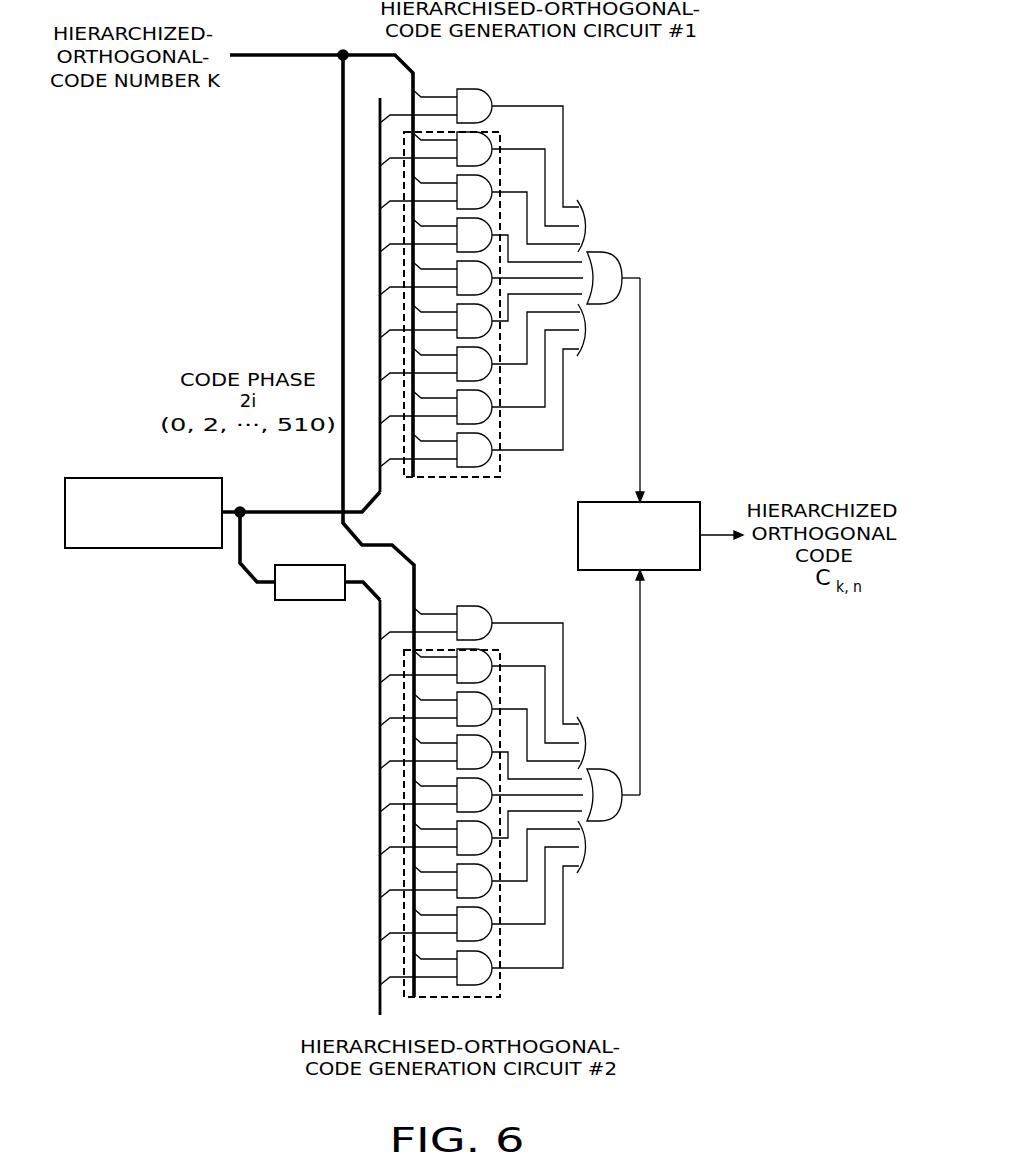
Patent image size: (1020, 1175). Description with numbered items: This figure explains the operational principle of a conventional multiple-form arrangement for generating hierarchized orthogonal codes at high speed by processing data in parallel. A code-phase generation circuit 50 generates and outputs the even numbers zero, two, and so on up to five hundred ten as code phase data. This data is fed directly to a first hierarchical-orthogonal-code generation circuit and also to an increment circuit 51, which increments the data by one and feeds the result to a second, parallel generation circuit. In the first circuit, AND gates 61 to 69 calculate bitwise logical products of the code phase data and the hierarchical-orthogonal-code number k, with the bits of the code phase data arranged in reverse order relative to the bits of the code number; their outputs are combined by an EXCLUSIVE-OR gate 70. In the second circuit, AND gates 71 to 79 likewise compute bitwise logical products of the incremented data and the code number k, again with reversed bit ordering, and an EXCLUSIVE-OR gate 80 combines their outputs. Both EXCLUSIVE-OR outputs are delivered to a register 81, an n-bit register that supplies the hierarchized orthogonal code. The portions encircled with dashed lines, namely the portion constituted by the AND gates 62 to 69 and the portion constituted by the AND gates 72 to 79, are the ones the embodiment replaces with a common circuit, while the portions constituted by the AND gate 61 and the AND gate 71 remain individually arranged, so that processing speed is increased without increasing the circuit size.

The code-phase generation circuit 50 is at (118, 478).
The increment circuit 51 is at (283, 565).
The AND gate 61 is at (480, 91).
The AND gate 62 is at (500, 132).
The AND gate 69 is at (482, 468).
The EXCLUSIVE-OR gate 70 is at (600, 252).
The AND gate 71 is at (480, 608).
The AND gate 72 is at (492, 658).
The AND gate 79 is at (482, 987).
The EXCLUSIVE-OR gate 80 is at (605, 821).
The register 81 is at (657, 500).